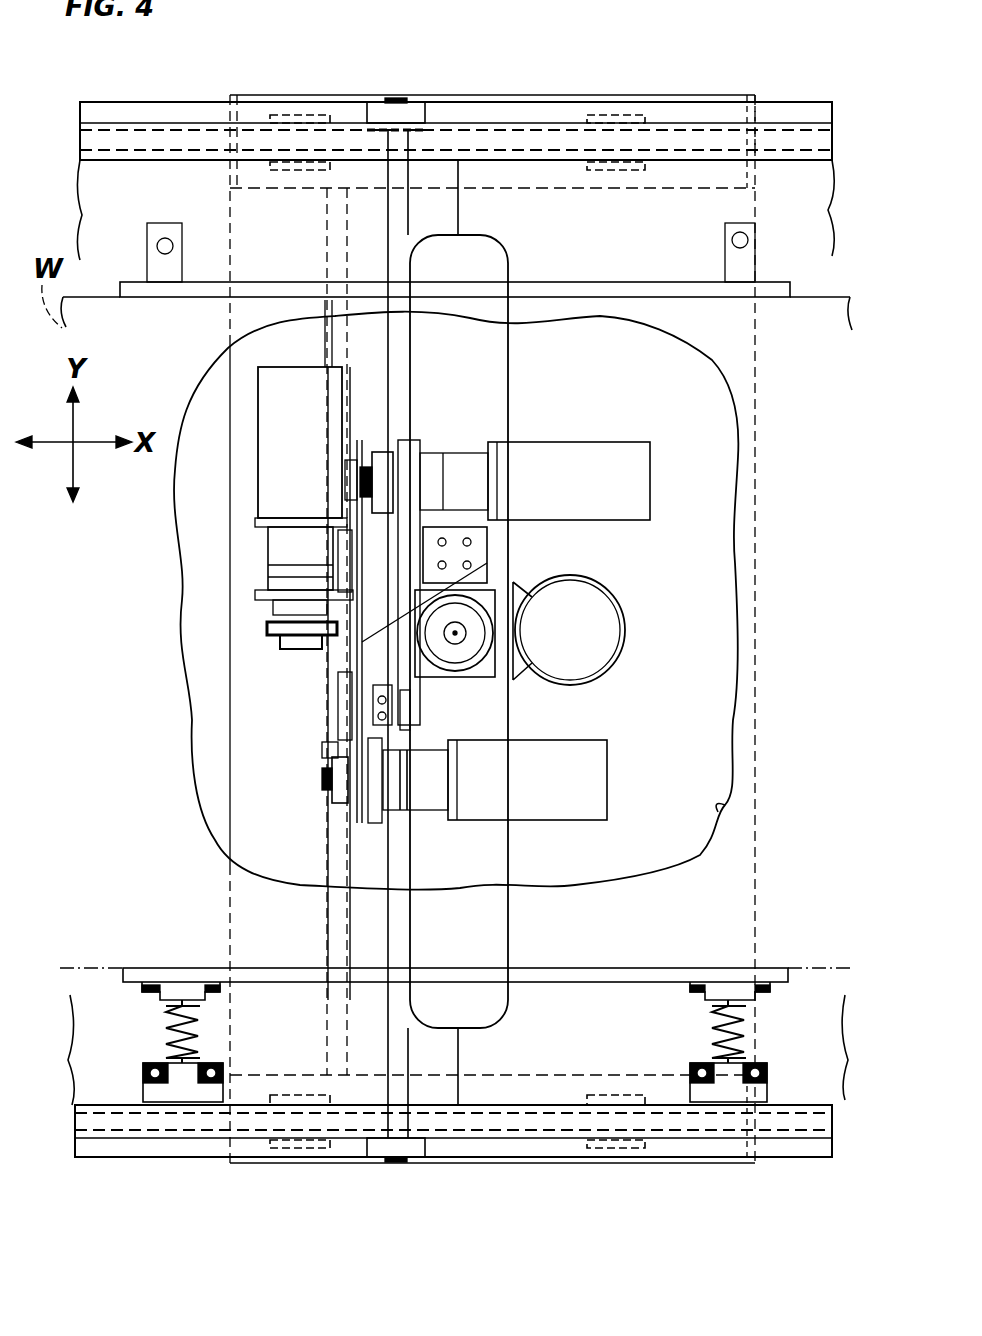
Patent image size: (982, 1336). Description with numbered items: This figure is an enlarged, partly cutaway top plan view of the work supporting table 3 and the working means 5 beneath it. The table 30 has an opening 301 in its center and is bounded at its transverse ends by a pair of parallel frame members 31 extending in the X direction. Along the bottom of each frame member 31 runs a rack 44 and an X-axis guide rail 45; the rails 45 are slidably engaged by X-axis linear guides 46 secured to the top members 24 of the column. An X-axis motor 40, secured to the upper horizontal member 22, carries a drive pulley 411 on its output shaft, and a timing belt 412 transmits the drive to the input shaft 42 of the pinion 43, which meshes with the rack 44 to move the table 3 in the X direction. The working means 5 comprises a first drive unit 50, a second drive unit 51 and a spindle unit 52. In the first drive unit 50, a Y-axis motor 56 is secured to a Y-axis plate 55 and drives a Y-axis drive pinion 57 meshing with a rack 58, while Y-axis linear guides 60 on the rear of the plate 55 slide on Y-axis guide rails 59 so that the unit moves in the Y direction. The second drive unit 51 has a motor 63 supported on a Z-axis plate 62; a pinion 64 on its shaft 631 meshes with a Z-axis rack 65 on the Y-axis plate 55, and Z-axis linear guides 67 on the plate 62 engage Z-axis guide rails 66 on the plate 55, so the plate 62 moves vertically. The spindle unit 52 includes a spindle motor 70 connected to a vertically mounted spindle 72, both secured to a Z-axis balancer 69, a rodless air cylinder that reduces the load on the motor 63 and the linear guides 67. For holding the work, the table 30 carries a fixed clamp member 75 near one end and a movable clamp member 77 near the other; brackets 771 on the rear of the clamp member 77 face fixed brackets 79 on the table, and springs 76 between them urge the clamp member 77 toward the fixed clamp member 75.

The work supporting table 3 is at (72, 235).
The working means 5 is at (615, 562).
The horizontal member 22 is at (228, 945).
The top member 24 is at (515, 98).
The table 30 is at (795, 185).
The frame member 31 is at (123, 128).
The X-axis motor 40 is at (268, 490).
The input shaft 42 is at (397, 232).
The pinion 43 is at (410, 115).
The rack 44 is at (185, 112).
The X-axis guide rail 45 is at (690, 130).
The X-axis linear guide 46 is at (300, 115).
The first drive unit 50 is at (437, 826).
The second drive unit 51 is at (545, 428).
The spindle unit 52 is at (487, 672).
The Y-axis plate 55 is at (362, 648).
The Y-axis motor 56 is at (600, 780).
The Y-axis drive pinion 57 is at (342, 790).
The rack 58 is at (340, 885).
The Y-axis guide rail 59 is at (323, 742).
The Y-axis linear guide 60 is at (300, 545).
The Z-axis plate 62 is at (410, 450).
The motor 63 is at (640, 455).
The pinion 64 is at (375, 462).
The Z-axis rack 65 is at (365, 492).
The Z-axis guide rail 66 is at (370, 642).
The Z-axis linear guide 67 is at (423, 522).
The Z-axis balancer 69 is at (487, 563).
The spindle motor 70 is at (600, 648).
The spindle 72 is at (463, 652).
The fixed clamp member 75 is at (640, 290).
The spring 76 is at (175, 1040).
The movable clamp member 77 is at (590, 975).
The fixed bracket 79 is at (155, 1093).
The opening 301 is at (740, 800).
The drive pulley 411 is at (285, 642).
The timing belt 412 is at (270, 625).
The shaft 631 is at (350, 472).
The bracket 771 is at (175, 997).